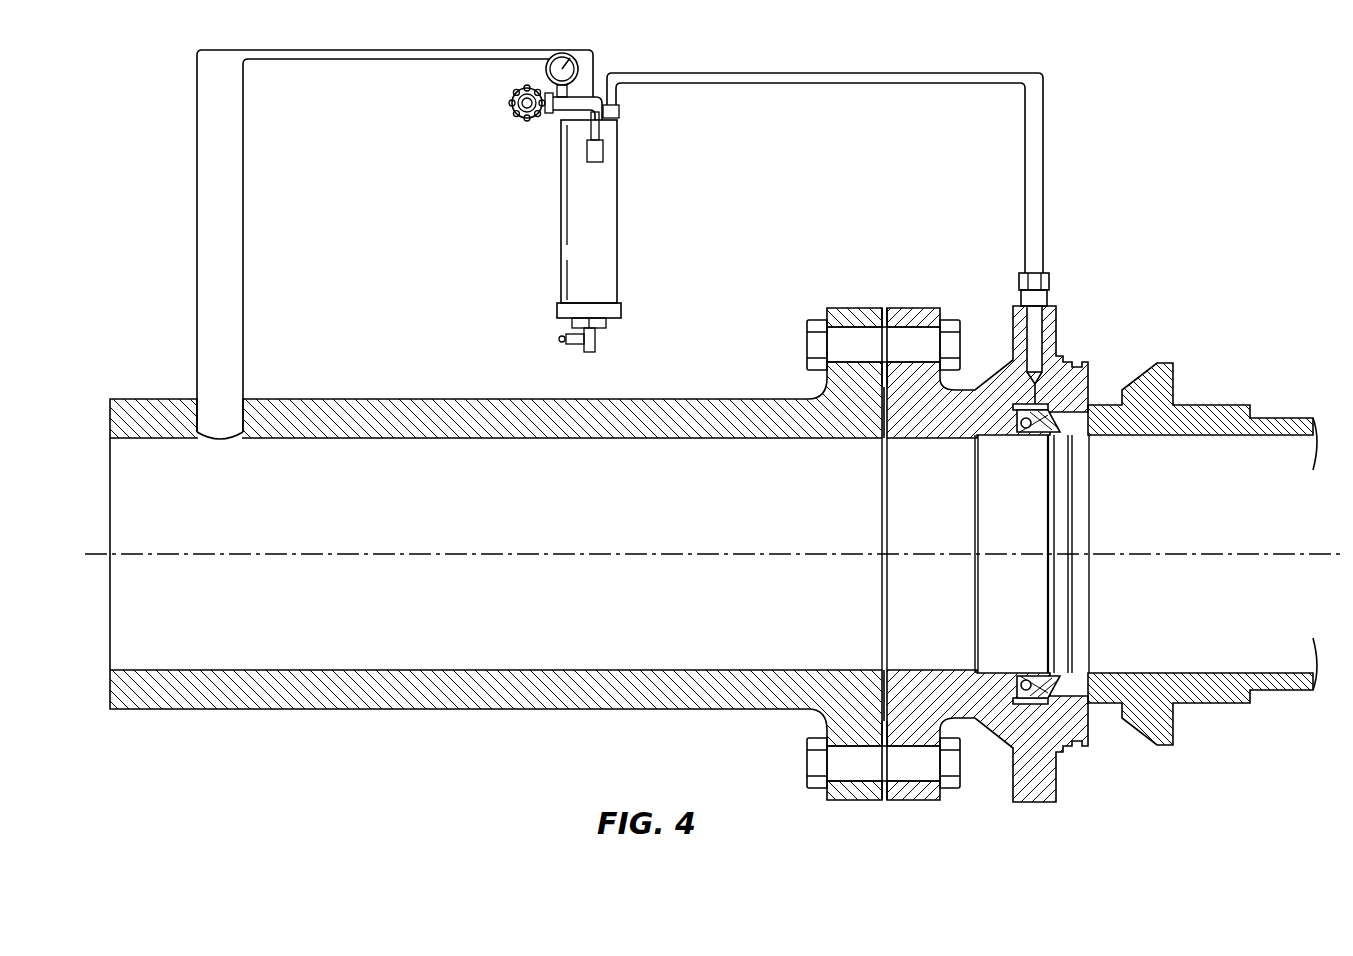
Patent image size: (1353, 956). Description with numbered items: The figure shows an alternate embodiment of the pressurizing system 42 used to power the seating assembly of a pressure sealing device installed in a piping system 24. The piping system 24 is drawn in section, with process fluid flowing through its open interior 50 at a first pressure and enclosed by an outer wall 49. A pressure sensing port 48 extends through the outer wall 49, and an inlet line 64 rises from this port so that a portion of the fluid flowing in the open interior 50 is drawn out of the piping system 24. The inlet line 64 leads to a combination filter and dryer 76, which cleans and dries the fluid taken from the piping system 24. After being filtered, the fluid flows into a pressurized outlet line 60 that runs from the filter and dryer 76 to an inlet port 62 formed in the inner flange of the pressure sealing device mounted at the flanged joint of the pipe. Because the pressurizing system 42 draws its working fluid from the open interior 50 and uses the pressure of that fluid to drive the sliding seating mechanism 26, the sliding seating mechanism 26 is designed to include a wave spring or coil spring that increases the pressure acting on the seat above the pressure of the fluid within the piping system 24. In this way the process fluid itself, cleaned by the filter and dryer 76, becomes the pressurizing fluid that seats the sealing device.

The piping system 24 is at (453, 393).
The sliding seating mechanism 26 is at (1021, 663).
The pressurizing system 42 is at (657, 192).
The pressure sensing port 48 is at (222, 405).
The outer wall 49 is at (651, 412).
The open interior 50 is at (378, 613).
The pressure outlet line 60 is at (1045, 175).
The inlet port 62 is at (1038, 316).
The inlet line 64 is at (220, 272).
The combination filter and dryer 76 is at (561, 205).